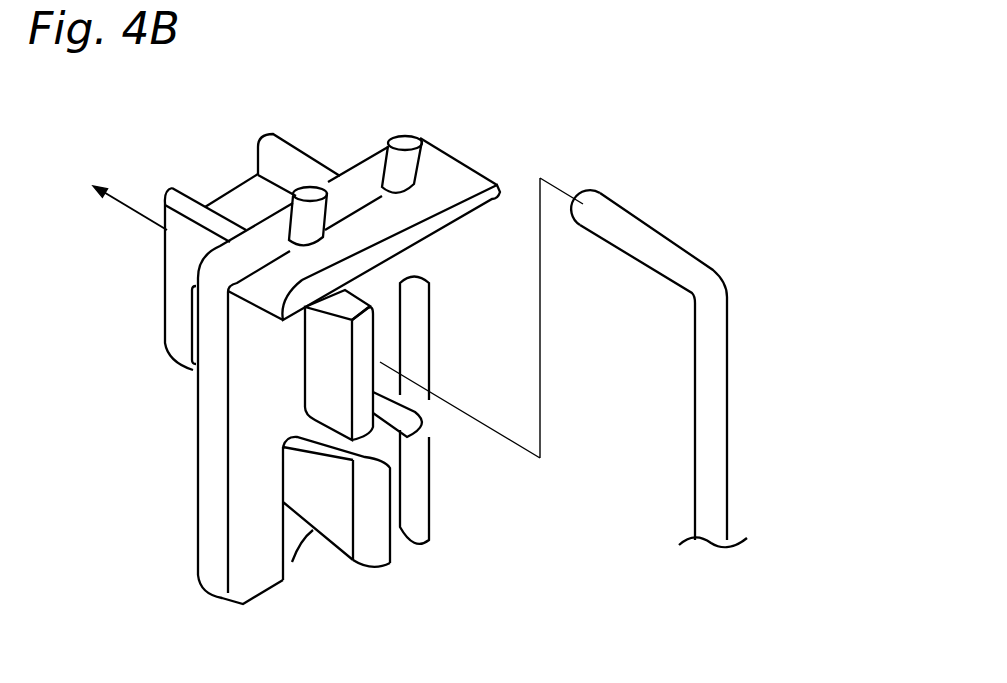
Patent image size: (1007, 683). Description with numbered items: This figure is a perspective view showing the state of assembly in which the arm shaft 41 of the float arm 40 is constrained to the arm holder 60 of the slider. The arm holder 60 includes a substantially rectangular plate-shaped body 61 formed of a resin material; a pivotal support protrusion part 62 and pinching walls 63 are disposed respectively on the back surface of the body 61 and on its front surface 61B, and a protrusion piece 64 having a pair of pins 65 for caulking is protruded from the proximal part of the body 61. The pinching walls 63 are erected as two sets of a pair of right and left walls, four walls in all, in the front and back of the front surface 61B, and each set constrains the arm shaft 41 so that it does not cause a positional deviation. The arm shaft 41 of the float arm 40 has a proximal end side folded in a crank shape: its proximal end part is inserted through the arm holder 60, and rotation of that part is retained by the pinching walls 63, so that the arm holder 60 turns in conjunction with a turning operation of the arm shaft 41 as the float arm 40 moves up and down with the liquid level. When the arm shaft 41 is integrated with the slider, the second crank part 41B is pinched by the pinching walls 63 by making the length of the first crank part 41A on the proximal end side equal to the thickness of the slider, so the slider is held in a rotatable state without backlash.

The float arm 40 is at (676, 212).
The arm shaft 41 is at (719, 368).
The first crank part 41A is at (655, 262).
The second crank part 41B is at (713, 405).
The arm holder 60 is at (485, 148).
The body 61 is at (210, 500).
The front surface 61B is at (255, 547).
The pivotal support protrusion part 62 is at (178, 273).
The pinching walls 63 is at (363, 330).
The protrusion piece 64 is at (443, 172).
The pins 65 is at (313, 190).